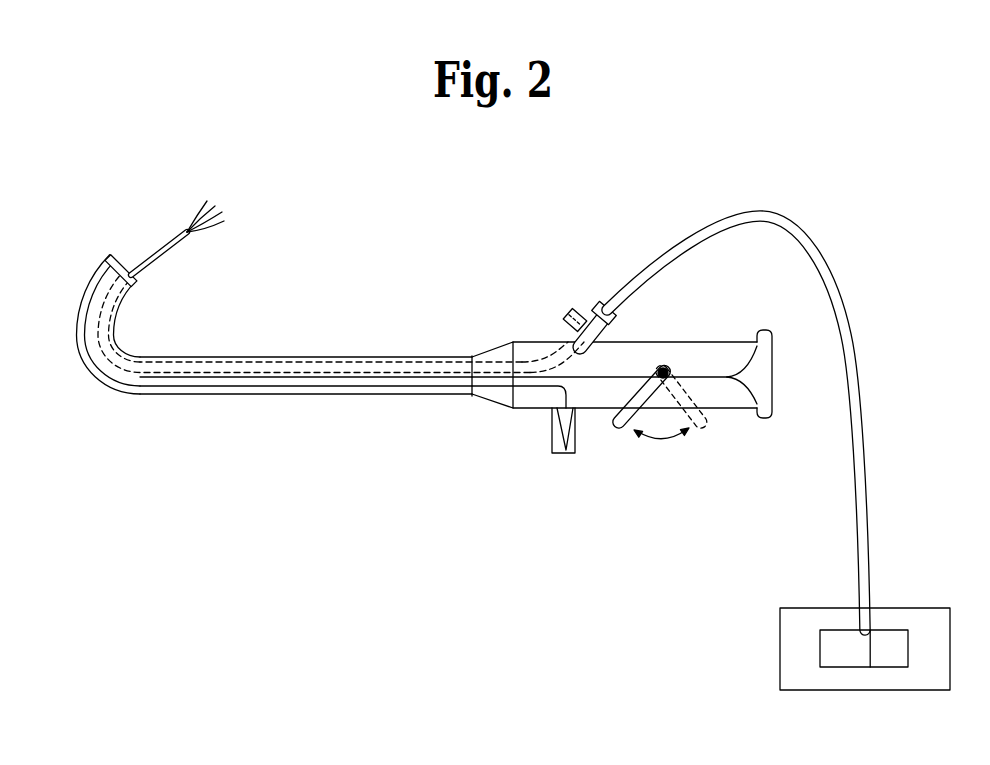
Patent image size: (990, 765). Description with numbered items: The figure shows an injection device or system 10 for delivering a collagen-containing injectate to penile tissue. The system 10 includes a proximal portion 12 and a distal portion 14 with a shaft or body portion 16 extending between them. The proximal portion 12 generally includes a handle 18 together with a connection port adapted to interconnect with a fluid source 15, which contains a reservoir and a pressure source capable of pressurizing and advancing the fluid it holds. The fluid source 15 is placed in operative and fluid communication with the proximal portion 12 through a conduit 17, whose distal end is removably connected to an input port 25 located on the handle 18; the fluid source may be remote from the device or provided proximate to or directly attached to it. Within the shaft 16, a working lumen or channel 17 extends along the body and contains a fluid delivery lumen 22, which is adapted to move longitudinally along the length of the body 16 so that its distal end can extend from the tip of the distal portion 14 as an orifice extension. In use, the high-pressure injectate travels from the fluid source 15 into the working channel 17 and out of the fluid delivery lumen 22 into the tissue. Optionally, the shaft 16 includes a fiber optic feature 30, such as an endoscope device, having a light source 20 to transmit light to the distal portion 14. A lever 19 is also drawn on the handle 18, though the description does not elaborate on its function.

The injection device or system 10 is at (447, 366).
The proximal portion 12 is at (651, 366).
The distal portion 14 is at (145, 343).
The fluid source 15 is at (893, 640).
The shaft or body portion 16 is at (335, 357).
The conduit / working lumen or channel 17 is at (393, 368).
The handle 18 is at (770, 378).
The lever 19 is at (727, 409).
The light source 20 is at (550, 432).
The fluid delivery lumen 22 is at (170, 256).
The input port 25 is at (600, 304).
The fiber optic feature 30 is at (128, 272).